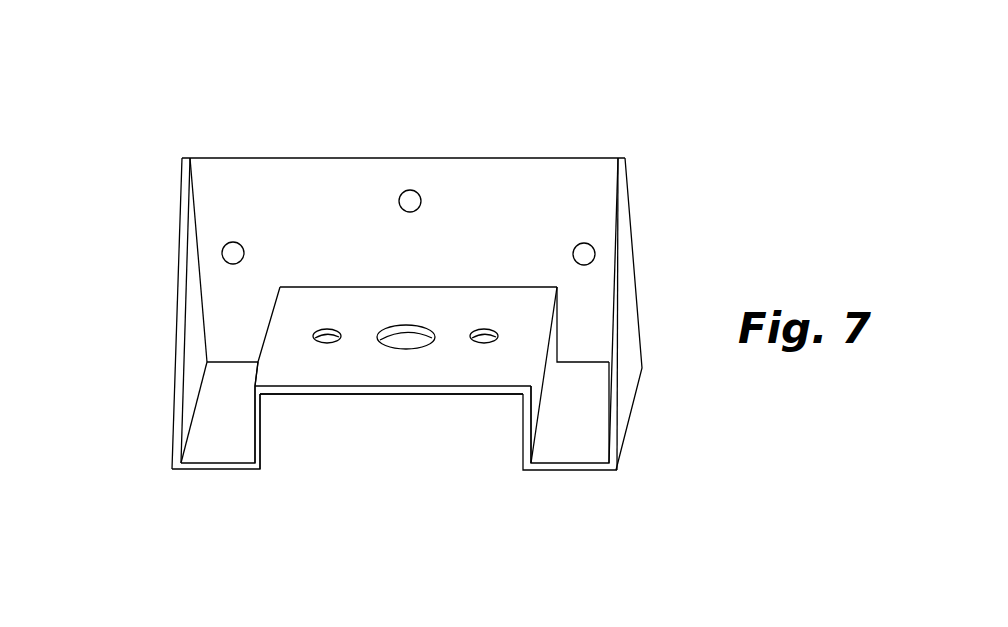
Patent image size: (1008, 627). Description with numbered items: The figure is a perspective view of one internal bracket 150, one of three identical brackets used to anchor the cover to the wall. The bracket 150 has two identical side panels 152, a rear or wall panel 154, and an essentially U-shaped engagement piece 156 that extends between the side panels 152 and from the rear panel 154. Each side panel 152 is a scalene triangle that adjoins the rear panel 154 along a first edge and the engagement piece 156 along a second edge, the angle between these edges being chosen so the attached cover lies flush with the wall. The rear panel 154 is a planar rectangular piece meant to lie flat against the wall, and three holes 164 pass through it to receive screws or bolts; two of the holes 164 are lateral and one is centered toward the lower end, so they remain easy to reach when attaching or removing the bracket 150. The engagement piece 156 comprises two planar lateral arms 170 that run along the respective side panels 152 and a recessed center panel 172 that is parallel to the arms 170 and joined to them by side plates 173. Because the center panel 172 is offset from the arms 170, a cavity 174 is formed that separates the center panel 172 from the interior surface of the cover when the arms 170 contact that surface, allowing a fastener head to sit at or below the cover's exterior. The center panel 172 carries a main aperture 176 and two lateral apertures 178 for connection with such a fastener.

The internal bracket 150 is at (366, 108).
The side panels 152 is at (193, 305).
The rear or wall panel 154 is at (517, 203).
The engagement piece 156 is at (265, 450).
The holes 164 is at (233, 242).
The lateral arms 170 is at (232, 450).
The recessed center panel 172 is at (363, 378).
The side plates 173 is at (266, 408).
The cavity 174 is at (337, 457).
The main aperture 176 is at (406, 337).
The lateral apertures 178 is at (313, 337).